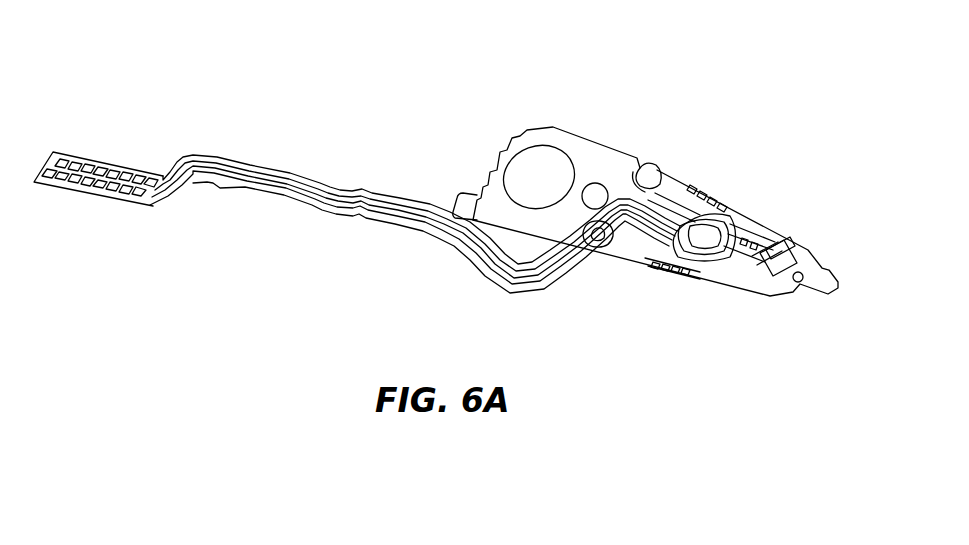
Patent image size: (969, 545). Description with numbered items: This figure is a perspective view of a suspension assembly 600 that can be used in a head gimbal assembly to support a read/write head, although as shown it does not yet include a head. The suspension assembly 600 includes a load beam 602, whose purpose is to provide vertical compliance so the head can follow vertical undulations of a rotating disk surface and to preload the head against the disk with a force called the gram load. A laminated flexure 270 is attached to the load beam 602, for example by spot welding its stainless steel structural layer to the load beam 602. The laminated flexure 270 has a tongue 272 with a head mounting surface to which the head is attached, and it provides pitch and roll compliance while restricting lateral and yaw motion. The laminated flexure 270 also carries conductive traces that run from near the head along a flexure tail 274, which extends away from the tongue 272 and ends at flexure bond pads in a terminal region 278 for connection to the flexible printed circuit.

The suspension assembly 600 is at (777, 60).
The terminal region 278 is at (92, 193).
The flexure tail 274 is at (287, 177).
The load beam 602 is at (677, 182).
The tongue 272 is at (783, 238).
The laminated flexure 270 is at (712, 268).